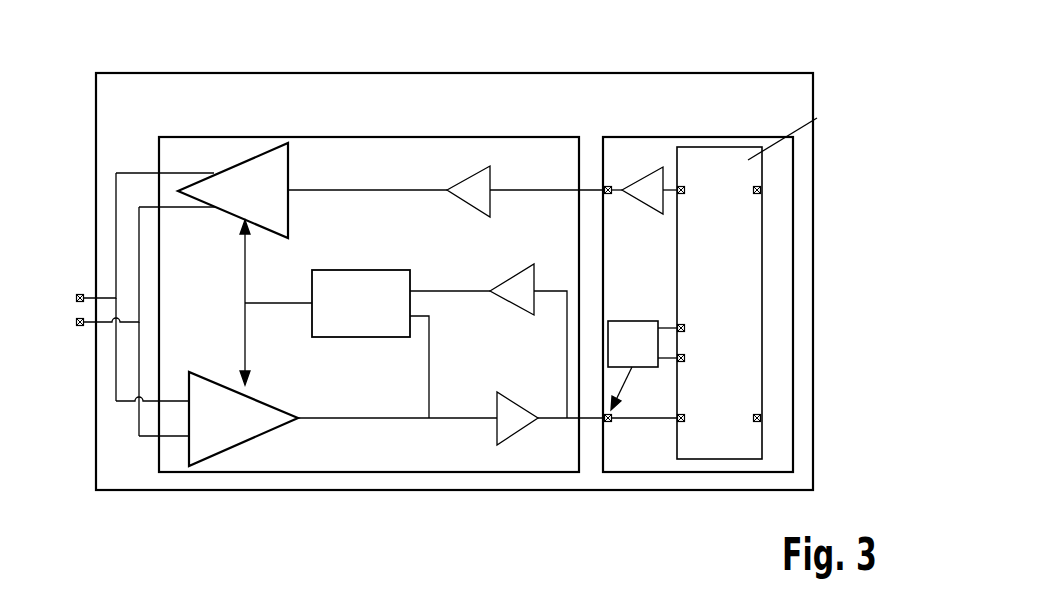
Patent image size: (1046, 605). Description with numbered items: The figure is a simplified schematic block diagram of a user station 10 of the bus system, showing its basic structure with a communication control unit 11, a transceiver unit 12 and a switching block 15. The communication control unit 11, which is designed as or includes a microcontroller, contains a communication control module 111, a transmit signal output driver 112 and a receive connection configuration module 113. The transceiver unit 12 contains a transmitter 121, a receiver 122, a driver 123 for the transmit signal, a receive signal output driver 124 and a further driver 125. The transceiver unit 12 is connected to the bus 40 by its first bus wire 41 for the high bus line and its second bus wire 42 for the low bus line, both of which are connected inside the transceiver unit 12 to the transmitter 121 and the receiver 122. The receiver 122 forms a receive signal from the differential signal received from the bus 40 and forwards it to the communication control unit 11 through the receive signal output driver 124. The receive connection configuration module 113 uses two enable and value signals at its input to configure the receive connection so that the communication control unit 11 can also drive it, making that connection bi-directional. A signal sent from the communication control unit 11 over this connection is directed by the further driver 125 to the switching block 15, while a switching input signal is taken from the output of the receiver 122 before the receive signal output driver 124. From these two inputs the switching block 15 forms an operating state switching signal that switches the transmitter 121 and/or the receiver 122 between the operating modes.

The user station 10 is at (733, 73).
The communication control unit 11 is at (793, 155).
The communication control module 111 is at (763, 234).
The transmit signal output driver 112 is at (643, 205).
The RxD connection configuration module 113 is at (631, 321).
The transceiver unit 12 is at (410, 137).
The transmitter 121 is at (240, 156).
The receiver 122 is at (268, 396).
The driver for the transmit signal 123 is at (467, 202).
The receive signal output driver 124 is at (527, 405).
The driver 125 is at (502, 300).
The switching block 15 is at (356, 270).
The bus 40 is at (67, 338).
The first bus wire 41 is at (84, 292).
The second bus wire 42 is at (88, 328).